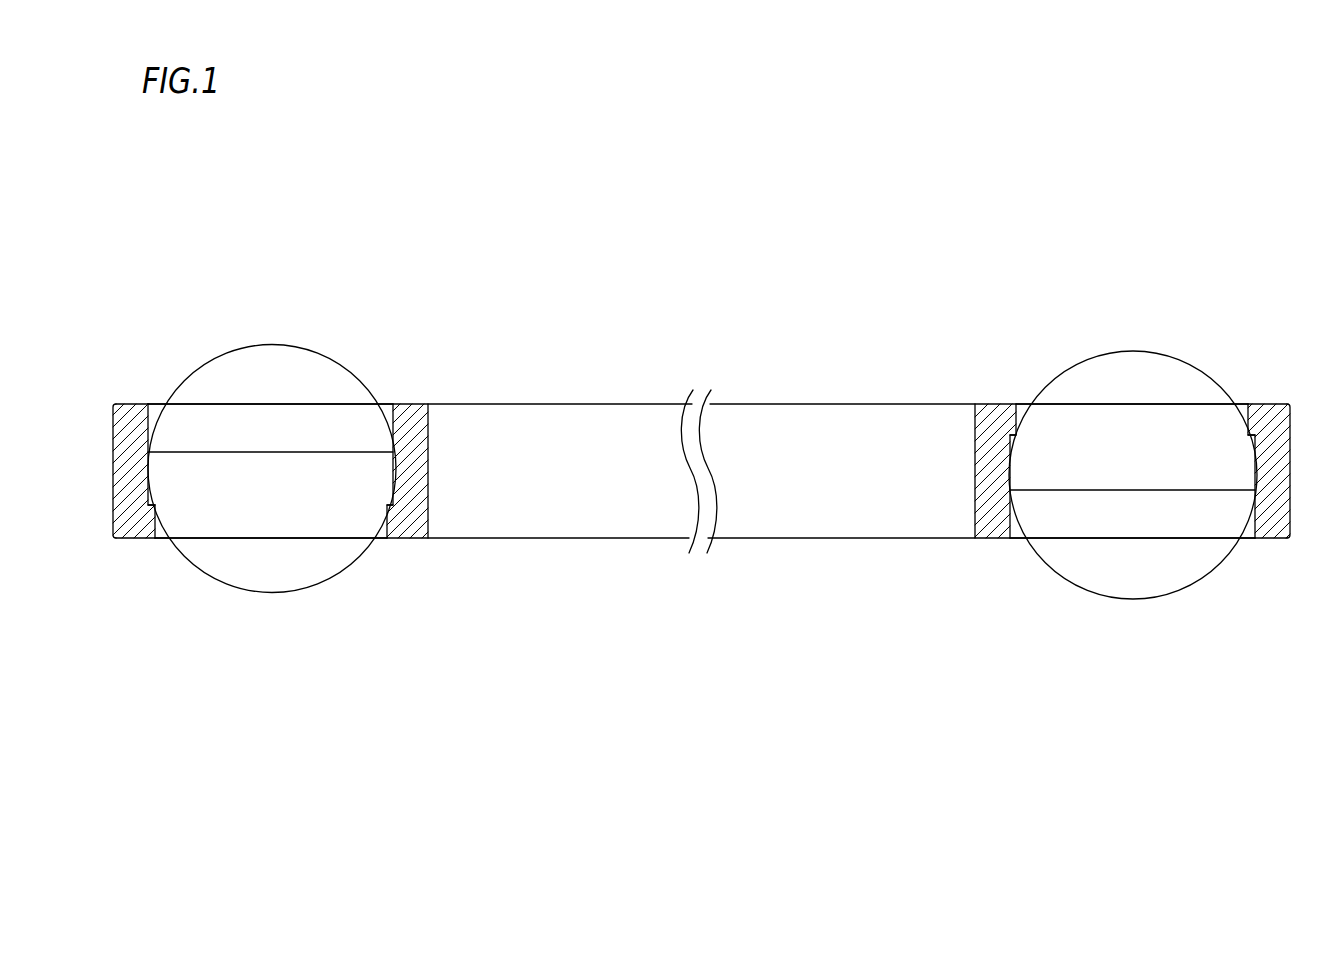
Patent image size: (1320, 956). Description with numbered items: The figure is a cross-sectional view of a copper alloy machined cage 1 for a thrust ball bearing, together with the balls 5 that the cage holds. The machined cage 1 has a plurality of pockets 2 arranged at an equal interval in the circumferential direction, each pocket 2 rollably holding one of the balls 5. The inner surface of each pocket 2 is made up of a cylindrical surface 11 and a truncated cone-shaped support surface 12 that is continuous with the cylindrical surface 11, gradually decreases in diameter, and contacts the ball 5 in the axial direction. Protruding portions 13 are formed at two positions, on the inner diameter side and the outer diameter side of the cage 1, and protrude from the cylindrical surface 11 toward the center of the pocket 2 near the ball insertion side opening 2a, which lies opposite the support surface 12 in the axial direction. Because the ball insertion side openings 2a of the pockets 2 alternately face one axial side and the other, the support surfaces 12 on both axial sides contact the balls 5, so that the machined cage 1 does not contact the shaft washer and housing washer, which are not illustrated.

The machined cage 1 is at (406, 402).
The pocket 2 is at (282, 300).
The ball insertion side opening 2a is at (153, 538).
The ball 5 is at (236, 347).
The cylindrical surface 11 is at (390, 493).
The support surface 12 is at (377, 425).
The protruding portion 13 is at (155, 540).